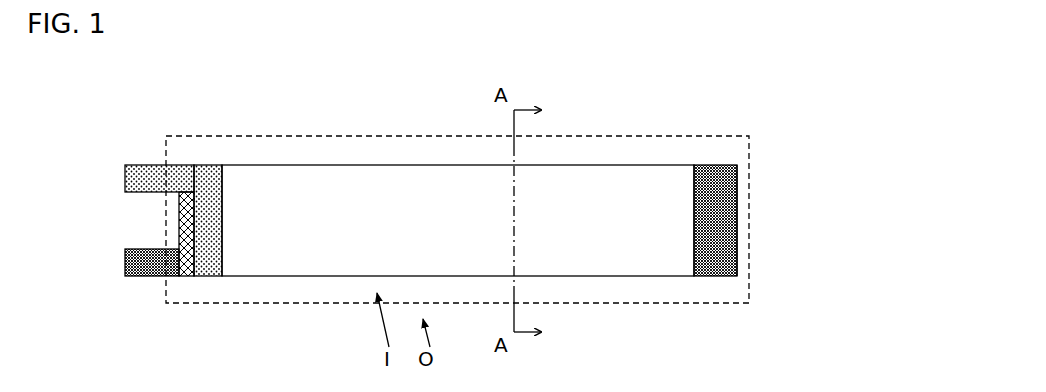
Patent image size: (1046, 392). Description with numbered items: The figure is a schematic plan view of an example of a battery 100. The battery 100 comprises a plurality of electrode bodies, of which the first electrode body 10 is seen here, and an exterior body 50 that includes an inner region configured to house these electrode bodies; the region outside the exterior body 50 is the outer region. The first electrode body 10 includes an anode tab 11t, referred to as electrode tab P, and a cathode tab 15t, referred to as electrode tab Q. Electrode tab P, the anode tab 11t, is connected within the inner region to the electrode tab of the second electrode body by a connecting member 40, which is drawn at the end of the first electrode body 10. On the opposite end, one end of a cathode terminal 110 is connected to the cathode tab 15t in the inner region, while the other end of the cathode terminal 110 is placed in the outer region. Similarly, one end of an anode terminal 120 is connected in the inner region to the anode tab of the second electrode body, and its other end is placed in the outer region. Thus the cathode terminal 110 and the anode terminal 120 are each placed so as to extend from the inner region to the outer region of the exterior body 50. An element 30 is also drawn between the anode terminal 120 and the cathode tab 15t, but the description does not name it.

The battery 100 is at (721, 81).
The first electrode body 10 is at (331, 186).
The anode tab 11t is at (732, 262).
The cathode tab 15t is at (207, 182).
The adhesive layer 30 is at (190, 262).
The connecting member 40 is at (718, 219).
The exterior body 50 is at (348, 305).
The cathode terminal 110 is at (137, 182).
The anode terminal 120 is at (141, 262).